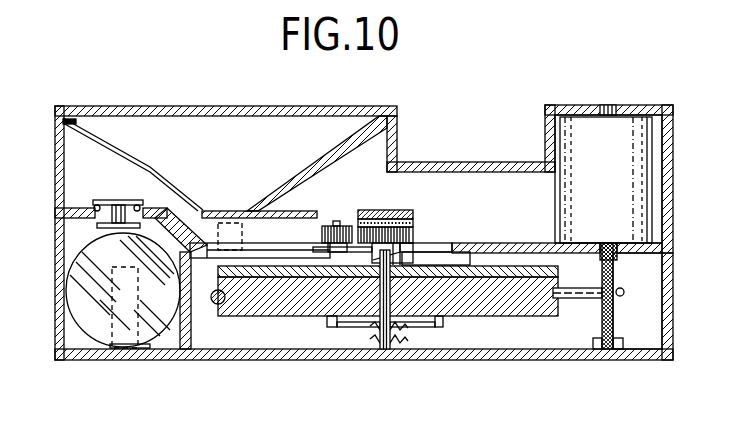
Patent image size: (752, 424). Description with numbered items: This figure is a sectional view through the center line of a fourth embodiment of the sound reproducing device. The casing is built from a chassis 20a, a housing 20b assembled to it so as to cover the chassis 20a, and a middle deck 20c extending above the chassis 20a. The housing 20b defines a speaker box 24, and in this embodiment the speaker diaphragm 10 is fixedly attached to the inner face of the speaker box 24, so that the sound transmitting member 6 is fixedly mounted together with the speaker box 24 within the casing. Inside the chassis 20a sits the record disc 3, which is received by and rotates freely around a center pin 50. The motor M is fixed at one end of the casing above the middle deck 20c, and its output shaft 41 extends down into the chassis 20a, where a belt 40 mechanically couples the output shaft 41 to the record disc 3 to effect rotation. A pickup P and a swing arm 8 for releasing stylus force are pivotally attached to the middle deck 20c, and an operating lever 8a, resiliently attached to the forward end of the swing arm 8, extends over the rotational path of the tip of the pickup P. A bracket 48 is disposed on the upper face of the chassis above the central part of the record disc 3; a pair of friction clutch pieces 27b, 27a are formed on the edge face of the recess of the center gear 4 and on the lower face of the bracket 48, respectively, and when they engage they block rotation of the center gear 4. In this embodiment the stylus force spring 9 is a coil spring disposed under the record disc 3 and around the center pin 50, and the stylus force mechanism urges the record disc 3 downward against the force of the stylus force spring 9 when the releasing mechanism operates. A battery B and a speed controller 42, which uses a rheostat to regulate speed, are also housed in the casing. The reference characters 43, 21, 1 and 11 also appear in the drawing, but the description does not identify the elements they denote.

The speaker diaphragm 10 is at (128, 155).
The speaker box 24 is at (76, 140).
The speed controller 42 is at (106, 204).
The support shelf 43 is at (78, 211).
The battery B is at (80, 283).
The pickup P is at (214, 243).
The carriage 21 is at (257, 247).
The sound transmitting member 6 is at (293, 211).
The base 1 is at (320, 247).
The lens unit 11 is at (362, 210).
The bracket 48 is at (405, 210).
The center gear 4 is at (413, 236).
The chassis 20a is at (672, 348).
The housing 20b is at (675, 137).
The middle deck 20c is at (515, 243).
The motor M is at (630, 130).
The belt 40 is at (623, 296).
The output shaft 41 is at (606, 347).
The record disc 3 is at (524, 312).
The stylus force spring 9 is at (395, 340).
The friction clutch piece 27a is at (441, 320).
The center pin 50 is at (387, 357).
The friction clutch piece 27b is at (360, 252).
The swing arm 8 is at (320, 280).
The operating lever 8a is at (313, 323).